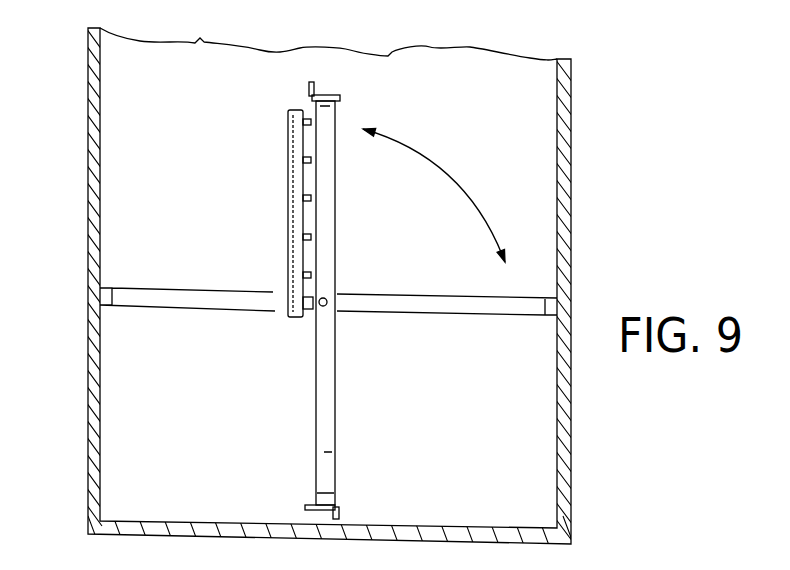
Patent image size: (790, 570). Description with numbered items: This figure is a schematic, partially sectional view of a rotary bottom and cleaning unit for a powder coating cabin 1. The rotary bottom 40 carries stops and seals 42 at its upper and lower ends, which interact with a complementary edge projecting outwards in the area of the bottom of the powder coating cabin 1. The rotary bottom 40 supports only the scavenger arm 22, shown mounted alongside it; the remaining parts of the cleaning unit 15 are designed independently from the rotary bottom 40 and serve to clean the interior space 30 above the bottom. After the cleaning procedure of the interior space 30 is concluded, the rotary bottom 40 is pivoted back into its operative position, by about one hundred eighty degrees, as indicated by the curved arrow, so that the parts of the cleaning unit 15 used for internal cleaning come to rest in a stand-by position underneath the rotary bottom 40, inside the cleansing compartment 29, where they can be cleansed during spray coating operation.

The powder coating cabin 1 is at (578, 150).
The cleaning unit 15 is at (335, 263).
The scavenger arm 22 is at (293, 177).
The cleansing compartment 29 is at (247, 452).
The interior space 30 is at (447, 104).
The rotary bottom 40 is at (333, 385).
The stops and seals 42 is at (313, 88).